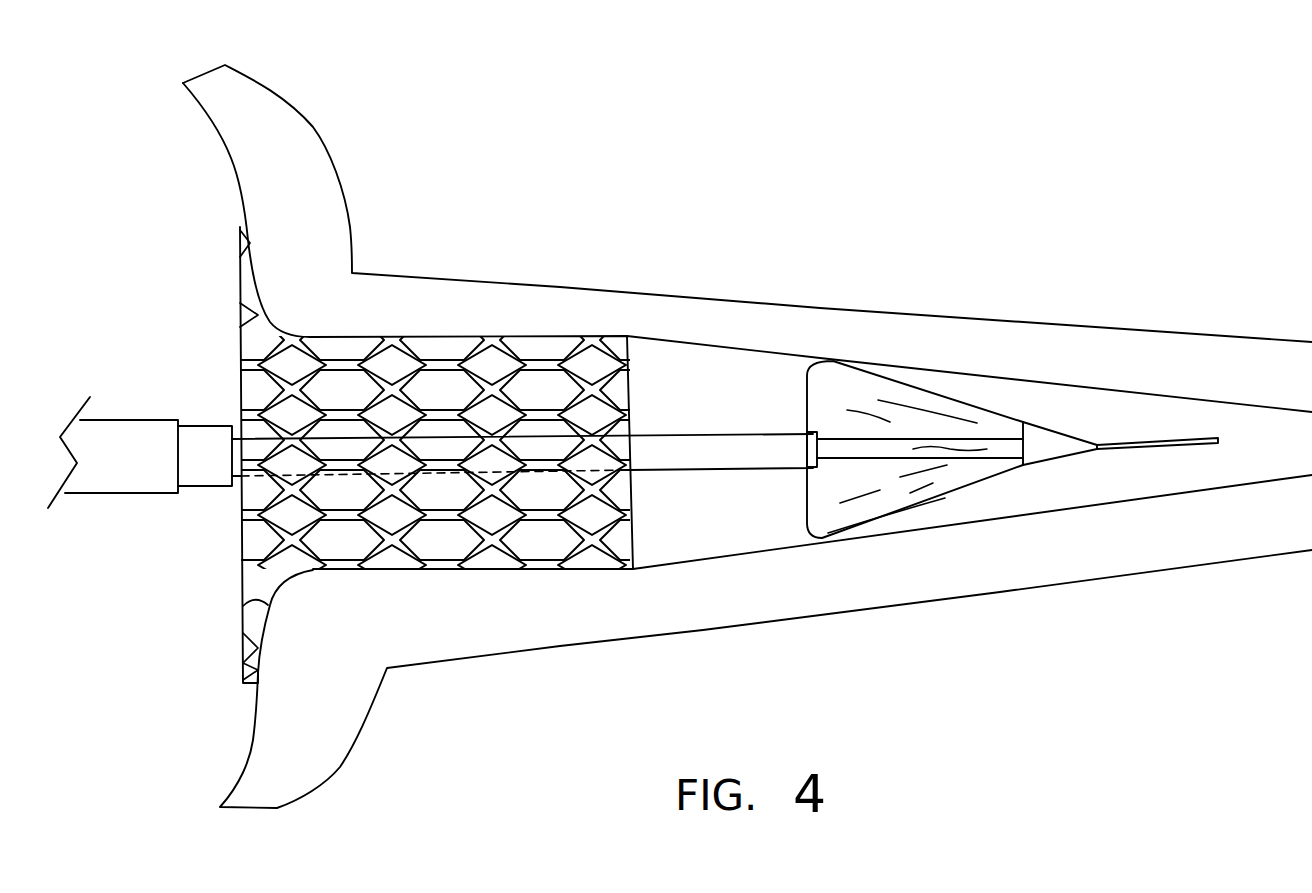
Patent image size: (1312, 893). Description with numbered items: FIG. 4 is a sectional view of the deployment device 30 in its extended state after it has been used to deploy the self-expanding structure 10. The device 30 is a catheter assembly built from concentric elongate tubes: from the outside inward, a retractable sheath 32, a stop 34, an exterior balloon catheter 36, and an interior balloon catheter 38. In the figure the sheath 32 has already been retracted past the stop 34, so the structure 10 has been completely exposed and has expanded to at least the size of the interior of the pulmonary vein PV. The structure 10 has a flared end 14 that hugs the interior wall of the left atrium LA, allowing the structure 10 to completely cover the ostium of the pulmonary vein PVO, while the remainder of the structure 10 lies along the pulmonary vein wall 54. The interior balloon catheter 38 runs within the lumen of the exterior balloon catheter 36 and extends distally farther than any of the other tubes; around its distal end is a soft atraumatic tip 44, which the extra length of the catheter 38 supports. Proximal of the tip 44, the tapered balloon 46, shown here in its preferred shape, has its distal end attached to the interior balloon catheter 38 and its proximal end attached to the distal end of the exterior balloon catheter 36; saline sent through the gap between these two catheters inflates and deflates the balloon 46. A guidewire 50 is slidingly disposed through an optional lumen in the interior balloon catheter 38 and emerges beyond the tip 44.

The self-expanding structure 10 is at (246, 571).
The flared end 14 is at (243, 643).
The deployment device 30 is at (140, 480).
The retractable sheath 32 is at (121, 420).
The stop 34 is at (203, 487).
The exterior balloon catheter 36 is at (673, 434).
The interior balloon catheter 38 is at (835, 457).
The atraumatic tip 44 is at (1055, 458).
The tapered balloon 46 is at (805, 400).
The guidewire 50 is at (1133, 440).
The pulmonary vein wall 54 is at (747, 238).
The pulmonary vein PV is at (583, 645).
The ostium of the pulmonary vein PVO is at (267, 600).
The left atrium LA is at (253, 722).